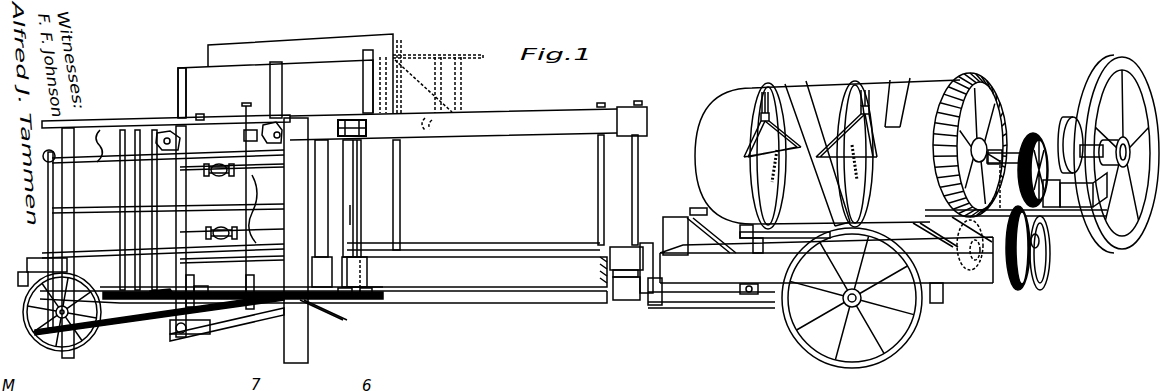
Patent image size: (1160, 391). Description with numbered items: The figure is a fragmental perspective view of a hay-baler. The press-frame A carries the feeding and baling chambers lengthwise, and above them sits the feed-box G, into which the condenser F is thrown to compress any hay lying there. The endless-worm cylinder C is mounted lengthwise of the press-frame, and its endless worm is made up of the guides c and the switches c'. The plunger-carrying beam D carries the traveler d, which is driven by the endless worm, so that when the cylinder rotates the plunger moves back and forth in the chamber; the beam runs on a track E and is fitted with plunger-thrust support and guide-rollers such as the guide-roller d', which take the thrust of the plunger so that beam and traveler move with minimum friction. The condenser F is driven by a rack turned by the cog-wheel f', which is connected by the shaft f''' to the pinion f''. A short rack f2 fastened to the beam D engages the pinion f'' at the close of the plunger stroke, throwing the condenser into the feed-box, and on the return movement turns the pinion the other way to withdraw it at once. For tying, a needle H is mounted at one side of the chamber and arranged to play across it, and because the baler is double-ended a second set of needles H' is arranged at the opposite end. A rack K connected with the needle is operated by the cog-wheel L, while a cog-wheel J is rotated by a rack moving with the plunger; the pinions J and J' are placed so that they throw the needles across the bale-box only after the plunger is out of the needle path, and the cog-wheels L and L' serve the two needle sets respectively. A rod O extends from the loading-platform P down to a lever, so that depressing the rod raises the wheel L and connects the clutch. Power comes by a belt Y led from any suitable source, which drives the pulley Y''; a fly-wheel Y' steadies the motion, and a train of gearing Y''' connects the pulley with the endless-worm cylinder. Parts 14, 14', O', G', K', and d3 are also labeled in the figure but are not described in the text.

The press-frame A is at (500, 128).
The loading-platform P is at (128, 121).
The condenser F is at (440, 55).
The rack f2 is at (434, 125).
The guide block 14 is at (283, 120).
The guide block 14' is at (164, 121).
The rod O is at (252, 192).
The bolt O' is at (204, 109).
The feed-box G is at (202, 93).
The standard G' is at (293, 90).
The needle H is at (168, 206).
The needles H' is at (163, 215).
The cog-wheel J is at (241, 282).
The pinion J' is at (200, 281).
The cog-wheel L is at (162, 282).
The cog-wheel L' is at (190, 335).
The rack K is at (227, 330).
The rail K' is at (159, 326).
The track E is at (595, 301).
The plunger-carrying beam D is at (622, 296).
The rod d3 is at (357, 207).
The cog-wheel f' is at (362, 129).
The pinion f'' is at (370, 306).
The shaft f''' is at (366, 214).
The endless-worm cylinder C is at (851, 148).
The guides c is at (825, 141).
The switches c' is at (827, 139).
The traveler d is at (734, 217).
The plunger-thrust support and guide-roller d' is at (747, 306).
The belt Y is at (1101, 153).
The fly-wheel Y' is at (1116, 166).
The pulley Y'' is at (1070, 157).
The train of gearing Y''' is at (1023, 257).